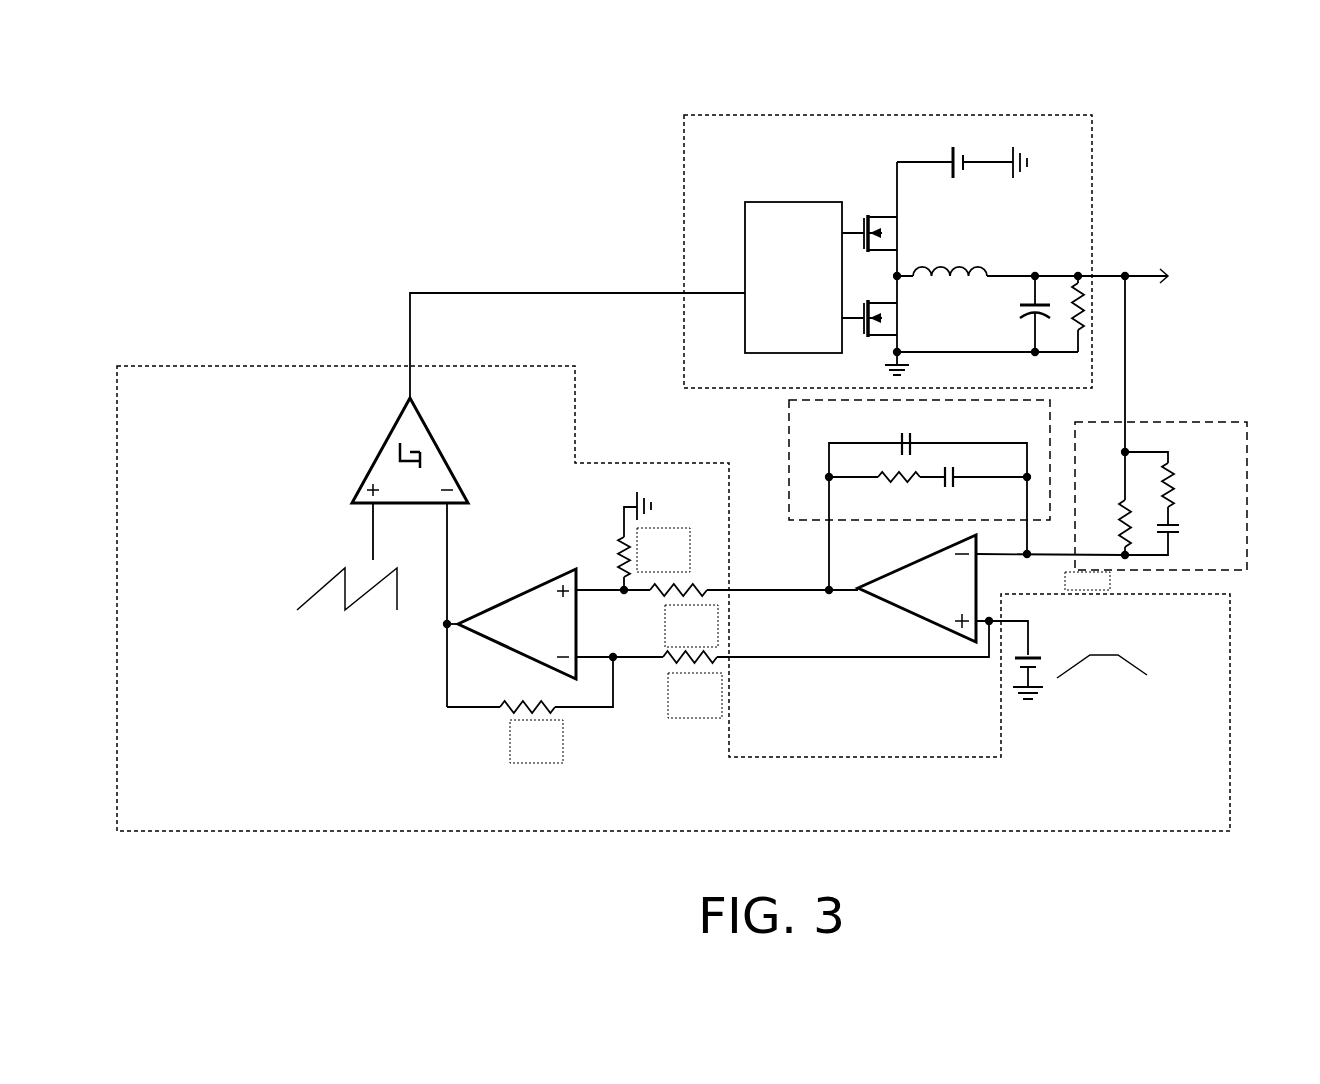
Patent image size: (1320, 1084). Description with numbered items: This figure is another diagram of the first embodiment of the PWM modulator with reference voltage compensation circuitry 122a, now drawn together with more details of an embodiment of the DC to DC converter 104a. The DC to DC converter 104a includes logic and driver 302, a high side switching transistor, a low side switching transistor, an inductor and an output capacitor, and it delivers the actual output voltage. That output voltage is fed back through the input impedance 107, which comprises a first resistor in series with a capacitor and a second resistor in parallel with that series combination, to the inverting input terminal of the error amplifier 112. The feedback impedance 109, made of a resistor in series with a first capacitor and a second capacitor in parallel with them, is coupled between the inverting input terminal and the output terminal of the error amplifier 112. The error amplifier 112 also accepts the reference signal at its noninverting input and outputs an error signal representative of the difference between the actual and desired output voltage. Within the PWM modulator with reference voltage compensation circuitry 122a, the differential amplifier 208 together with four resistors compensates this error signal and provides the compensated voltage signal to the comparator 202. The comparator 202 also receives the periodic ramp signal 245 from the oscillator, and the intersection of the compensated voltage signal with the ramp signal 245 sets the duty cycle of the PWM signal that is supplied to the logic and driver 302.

The DC to DC converter 104a is at (771, 115).
The logic and driver 302 is at (745, 251).
The PWM modulator with reference voltage compensation circuitry 122a is at (293, 366).
The comparator 202 is at (383, 444).
The ramp signal 245 is at (322, 583).
The differential amplifier 208 is at (530, 590).
The feedback impedance 109 is at (790, 514).
The input impedance 107 is at (1155, 422).
The error amplifier 112 is at (868, 596).